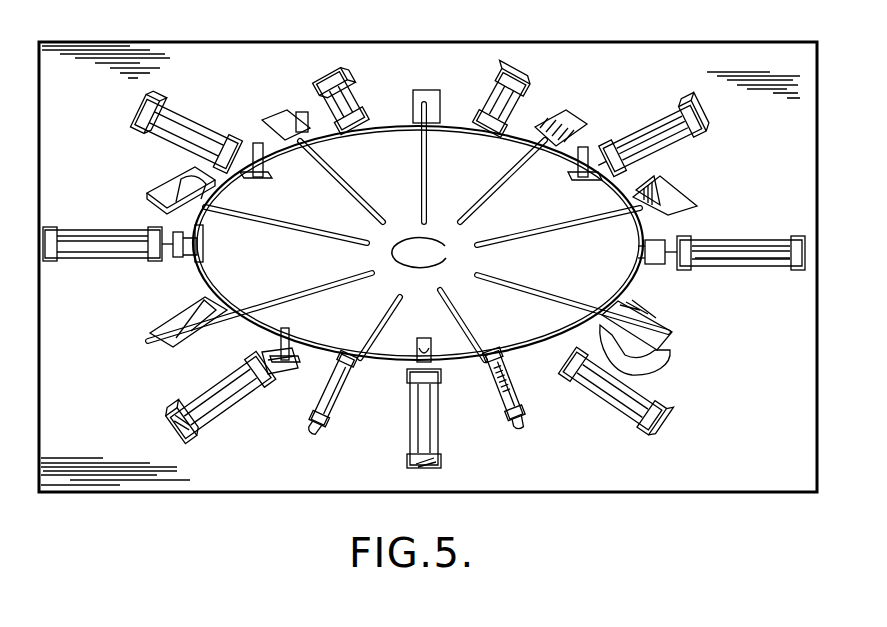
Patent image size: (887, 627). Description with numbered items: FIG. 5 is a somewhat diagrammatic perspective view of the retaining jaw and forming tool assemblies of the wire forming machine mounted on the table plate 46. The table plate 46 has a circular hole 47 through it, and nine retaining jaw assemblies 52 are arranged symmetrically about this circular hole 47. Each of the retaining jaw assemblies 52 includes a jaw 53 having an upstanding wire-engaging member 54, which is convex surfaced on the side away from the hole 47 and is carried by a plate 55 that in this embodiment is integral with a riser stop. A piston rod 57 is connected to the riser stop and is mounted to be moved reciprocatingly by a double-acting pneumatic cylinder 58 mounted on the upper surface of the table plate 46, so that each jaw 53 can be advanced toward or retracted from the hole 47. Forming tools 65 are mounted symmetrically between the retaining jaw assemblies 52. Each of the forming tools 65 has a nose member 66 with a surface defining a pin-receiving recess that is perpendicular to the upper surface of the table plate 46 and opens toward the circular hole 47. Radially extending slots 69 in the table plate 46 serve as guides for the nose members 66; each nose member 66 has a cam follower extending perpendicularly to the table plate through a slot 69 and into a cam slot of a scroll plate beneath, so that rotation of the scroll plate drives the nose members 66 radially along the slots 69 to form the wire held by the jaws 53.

The table plate 46 is at (636, 70).
The circular hole 47 is at (446, 252).
The retaining jaw assemblies 52 is at (243, 79).
The jaw 53 is at (247, 176).
The wire-engaging member 54 is at (294, 329).
The plate 55 is at (272, 383).
The piston rod 57 is at (664, 244).
The double-acting pneumatic cylinder 58 is at (628, 133).
The forming tools 65 is at (432, 110).
The nose member 66 is at (195, 182).
The slots 69 is at (328, 238).